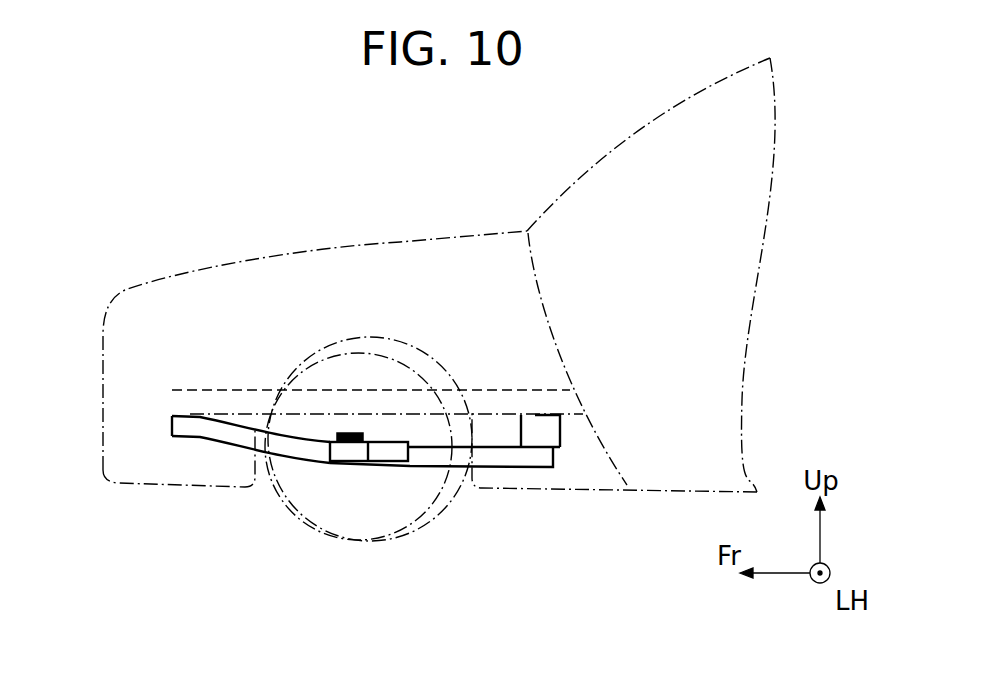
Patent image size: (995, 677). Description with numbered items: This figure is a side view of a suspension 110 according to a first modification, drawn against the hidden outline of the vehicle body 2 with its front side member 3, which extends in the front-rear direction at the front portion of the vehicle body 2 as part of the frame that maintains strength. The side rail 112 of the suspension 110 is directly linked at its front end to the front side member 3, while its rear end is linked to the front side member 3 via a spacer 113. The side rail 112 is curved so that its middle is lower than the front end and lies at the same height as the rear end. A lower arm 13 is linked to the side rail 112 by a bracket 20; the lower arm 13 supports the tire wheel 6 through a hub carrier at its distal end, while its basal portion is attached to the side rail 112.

The vehicle body 2 is at (475, 233).
The front side member 3 is at (172, 408).
The tire wheel 6 is at (407, 510).
The lower arm 13 is at (343, 452).
The bracket 20 is at (352, 432).
The suspension 110 is at (158, 447).
The side rail 112 is at (203, 435).
The spacer 113 is at (562, 432).